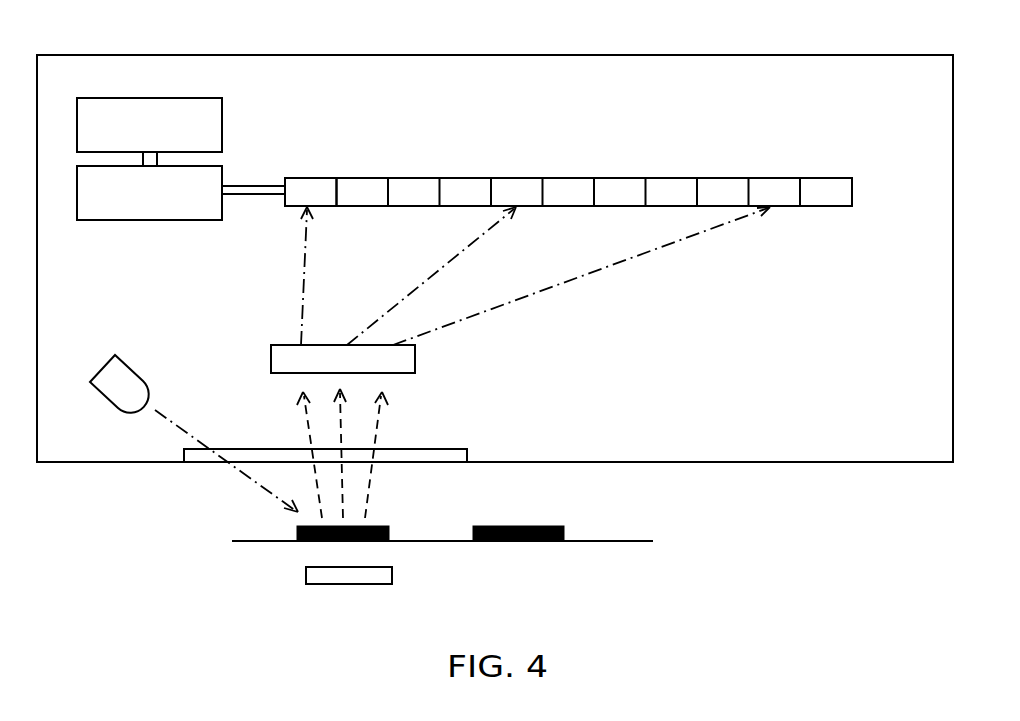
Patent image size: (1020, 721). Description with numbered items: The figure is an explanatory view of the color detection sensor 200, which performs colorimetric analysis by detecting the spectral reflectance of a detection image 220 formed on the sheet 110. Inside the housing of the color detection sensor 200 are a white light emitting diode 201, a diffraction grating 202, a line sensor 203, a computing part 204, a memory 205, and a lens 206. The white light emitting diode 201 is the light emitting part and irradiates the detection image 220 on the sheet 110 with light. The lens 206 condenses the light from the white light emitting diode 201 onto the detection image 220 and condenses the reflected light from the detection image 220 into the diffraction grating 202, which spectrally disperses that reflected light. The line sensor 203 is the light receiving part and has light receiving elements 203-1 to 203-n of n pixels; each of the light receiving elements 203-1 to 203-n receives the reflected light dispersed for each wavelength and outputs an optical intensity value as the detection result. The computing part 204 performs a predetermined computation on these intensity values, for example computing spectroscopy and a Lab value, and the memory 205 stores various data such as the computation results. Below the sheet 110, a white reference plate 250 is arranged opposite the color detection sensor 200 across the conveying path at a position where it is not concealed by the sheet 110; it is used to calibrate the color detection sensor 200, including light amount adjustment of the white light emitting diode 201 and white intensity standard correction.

The color detection sensor 200 is at (846, 55).
The white light emitting diode 201 is at (133, 365).
The diffraction grating 202 is at (417, 363).
The line sensor 203 is at (612, 153).
The light receiving element 203-1 is at (335, 157).
The light receiving element 203-n is at (832, 178).
The computing part 204 is at (222, 172).
The memory 205 is at (222, 118).
The lens 206 is at (468, 450).
The sheet 110 is at (602, 542).
The detection image 220 is at (389, 531).
The white reference plate 250 is at (347, 585).